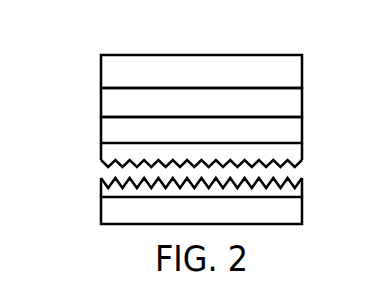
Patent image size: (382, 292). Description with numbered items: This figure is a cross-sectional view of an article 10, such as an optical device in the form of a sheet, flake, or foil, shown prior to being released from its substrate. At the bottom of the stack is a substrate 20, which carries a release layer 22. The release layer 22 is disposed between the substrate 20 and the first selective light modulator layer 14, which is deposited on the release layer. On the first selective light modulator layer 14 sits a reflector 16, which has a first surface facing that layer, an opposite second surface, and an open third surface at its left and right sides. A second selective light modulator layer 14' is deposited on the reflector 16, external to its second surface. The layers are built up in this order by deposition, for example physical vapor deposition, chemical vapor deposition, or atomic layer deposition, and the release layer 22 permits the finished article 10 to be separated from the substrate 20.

The article 10 is at (141, 36).
The second selective light modulator layer 14' is at (177, 71).
The reflector 16 is at (101, 102).
The first selective light modulator layer 14 is at (178, 130).
The release layer 22 is at (101, 160).
The substrate 20 is at (101, 207).